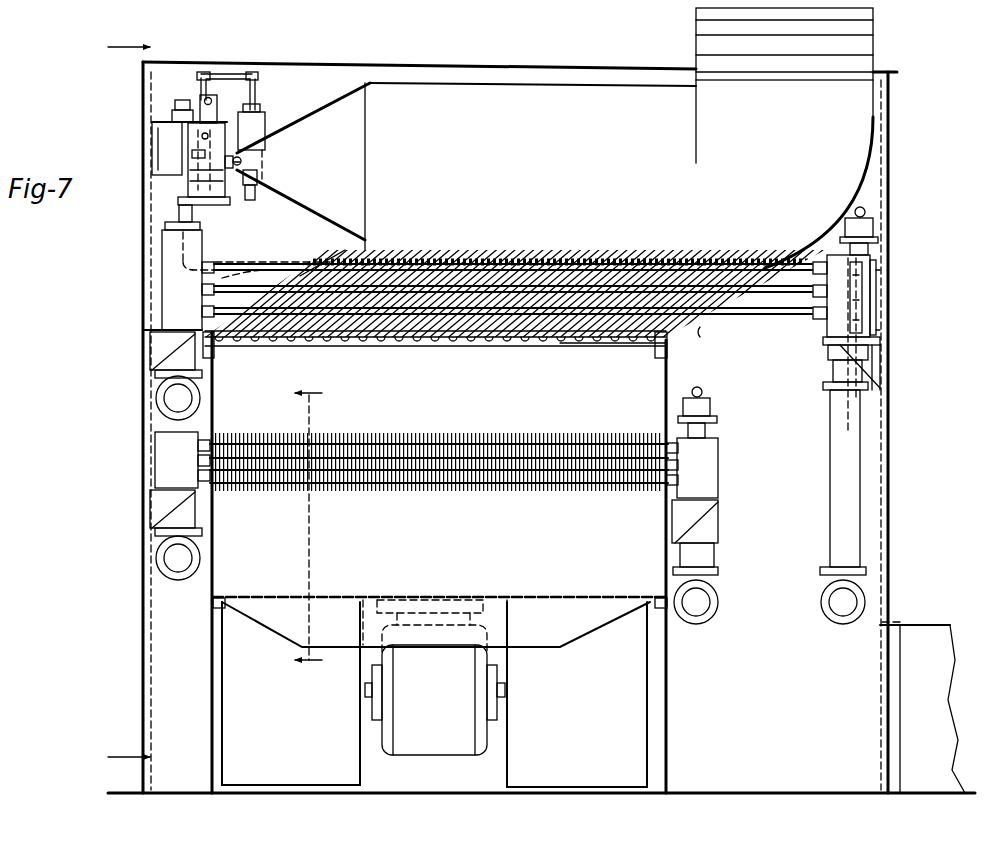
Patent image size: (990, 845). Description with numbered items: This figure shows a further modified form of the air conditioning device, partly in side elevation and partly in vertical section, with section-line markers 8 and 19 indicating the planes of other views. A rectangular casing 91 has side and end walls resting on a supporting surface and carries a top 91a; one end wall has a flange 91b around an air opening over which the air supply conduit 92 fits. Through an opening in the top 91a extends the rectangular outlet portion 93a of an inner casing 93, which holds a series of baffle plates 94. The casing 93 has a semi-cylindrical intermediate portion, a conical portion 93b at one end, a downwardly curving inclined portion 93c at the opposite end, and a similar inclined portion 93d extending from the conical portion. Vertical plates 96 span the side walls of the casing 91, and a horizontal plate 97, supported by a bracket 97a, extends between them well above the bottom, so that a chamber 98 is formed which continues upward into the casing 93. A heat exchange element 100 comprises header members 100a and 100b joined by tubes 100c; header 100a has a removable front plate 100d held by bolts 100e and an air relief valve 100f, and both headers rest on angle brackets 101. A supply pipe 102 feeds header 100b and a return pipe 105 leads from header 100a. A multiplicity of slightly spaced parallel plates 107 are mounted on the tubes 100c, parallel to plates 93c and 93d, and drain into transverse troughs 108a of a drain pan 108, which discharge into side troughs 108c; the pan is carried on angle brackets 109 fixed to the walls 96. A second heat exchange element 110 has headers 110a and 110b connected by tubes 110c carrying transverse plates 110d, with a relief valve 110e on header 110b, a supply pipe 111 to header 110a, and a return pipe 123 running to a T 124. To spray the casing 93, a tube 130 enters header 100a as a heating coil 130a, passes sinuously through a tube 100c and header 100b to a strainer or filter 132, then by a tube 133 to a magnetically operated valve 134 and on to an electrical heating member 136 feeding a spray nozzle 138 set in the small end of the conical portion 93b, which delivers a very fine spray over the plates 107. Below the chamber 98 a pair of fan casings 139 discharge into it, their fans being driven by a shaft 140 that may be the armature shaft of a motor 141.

The section line 19- 19 is at (139, 409).
The section line 8- 8 is at (308, 527).
The casing 91 is at (883, 402).
The top 91a is at (454, 68).
The flange 91b is at (896, 632).
The air supply conduit 92 is at (913, 620).
The casing 93 is at (525, 88).
The outlet portion 93a is at (698, 80).
The conical portion 93b is at (322, 104).
The downwardly inclined portion 93c is at (700, 336).
The inclined portion 93d is at (268, 280).
The baffle plates 94 is at (864, 42).
The vertical plates 96 is at (214, 393).
The horizontal plate 97 is at (542, 599).
The bracket 97a is at (588, 636).
The chamber 98 is at (439, 560).
The heat exchange element 100 is at (818, 340).
The header member 100a is at (860, 266).
The header member 100b is at (175, 289).
The tubes 100c is at (300, 265).
The removable front plate 100d is at (858, 294).
The bolts 100e is at (880, 332).
The air relief valve 100f is at (862, 229).
The angle brackets 101 is at (160, 355).
The supply pipe 102 is at (170, 400).
The return pipe 105 is at (858, 461).
The plates 107 is at (625, 254).
The drain pan 108 is at (464, 347).
The transverse troughs 108a is at (652, 346).
The side troughs 108c is at (335, 348).
The angle brackets 109 is at (215, 357).
The second heat exchange element 110 is at (404, 491).
The header member 110a is at (165, 464).
The header member 110b is at (712, 447).
The tubes 110c is at (254, 479).
The plates 110d is at (300, 433).
The relief valve 110e is at (708, 404).
The supply pipe 111 is at (170, 560).
The return pipe 123 is at (704, 597).
The T 124 is at (150, 104).
The tube 130 is at (240, 258).
The heating coil 130a is at (830, 284).
The strainer or filter 132 is at (258, 132).
The tube 133 is at (257, 84).
The magnetically operated valve 134 is at (185, 111).
The electrical heating member 136 is at (215, 205).
The spray nozzle 138 is at (240, 161).
The fan casings 139 is at (232, 678).
The shaft 140 is at (368, 696).
The motor 141 is at (420, 748).